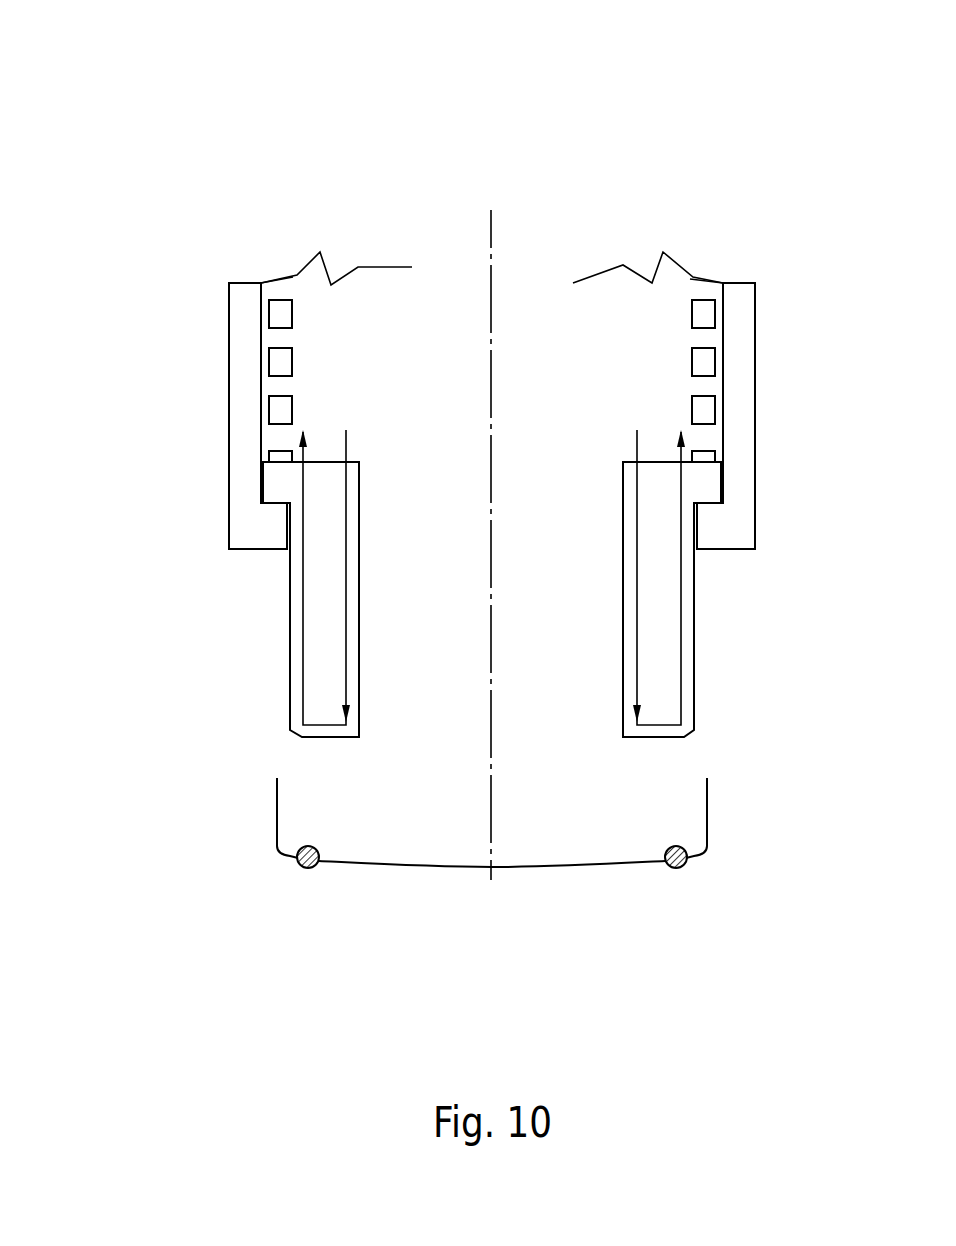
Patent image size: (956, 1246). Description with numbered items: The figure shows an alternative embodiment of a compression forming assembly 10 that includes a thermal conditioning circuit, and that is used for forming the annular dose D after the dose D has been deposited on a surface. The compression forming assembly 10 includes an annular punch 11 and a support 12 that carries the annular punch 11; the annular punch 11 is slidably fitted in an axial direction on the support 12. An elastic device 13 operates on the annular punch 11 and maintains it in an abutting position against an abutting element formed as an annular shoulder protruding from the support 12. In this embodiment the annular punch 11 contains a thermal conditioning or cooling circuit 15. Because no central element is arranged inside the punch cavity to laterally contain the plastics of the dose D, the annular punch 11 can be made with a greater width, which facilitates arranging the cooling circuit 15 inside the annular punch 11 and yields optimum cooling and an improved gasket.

The compression forming assembly 10 is at (423, 107).
The annular punch 11 is at (688, 633).
The support 12 is at (240, 357).
The elastic device 13 is at (697, 313).
The thermal conditioning or cooling circuit 15 is at (302, 643).
The annular dose D is at (318, 852).